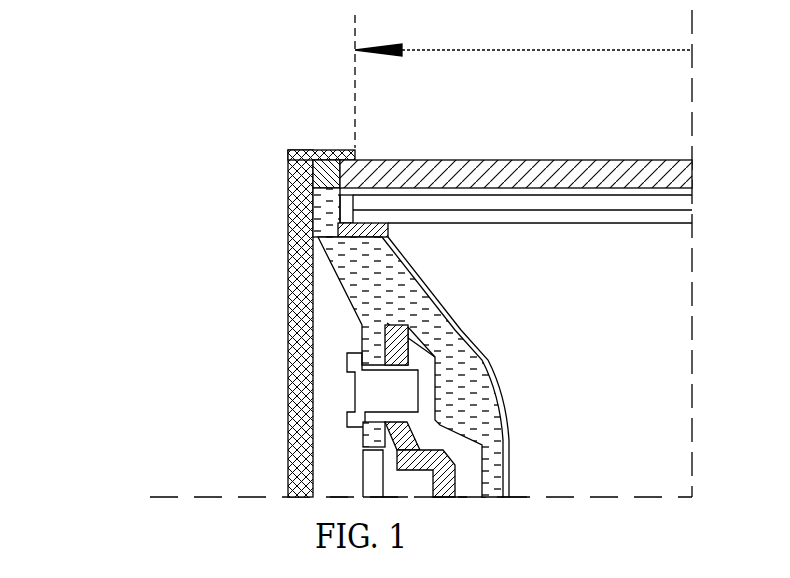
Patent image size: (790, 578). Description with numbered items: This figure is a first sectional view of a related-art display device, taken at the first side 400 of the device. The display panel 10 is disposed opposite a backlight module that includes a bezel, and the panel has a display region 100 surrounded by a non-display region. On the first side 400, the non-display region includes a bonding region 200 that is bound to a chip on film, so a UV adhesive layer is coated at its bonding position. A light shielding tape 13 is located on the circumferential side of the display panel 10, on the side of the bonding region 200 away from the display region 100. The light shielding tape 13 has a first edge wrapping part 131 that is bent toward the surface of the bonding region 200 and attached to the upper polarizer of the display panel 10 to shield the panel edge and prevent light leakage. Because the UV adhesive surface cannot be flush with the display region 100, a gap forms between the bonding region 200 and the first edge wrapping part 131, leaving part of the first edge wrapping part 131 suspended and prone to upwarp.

The display region 100 is at (523, 34).
The display panel 10 is at (522, 160).
The light shielding tape 13 is at (273, 289).
The first edge wrapping part 131 is at (305, 150).
The bonding region 200 is at (317, 162).
The first side 400 is at (152, 310).